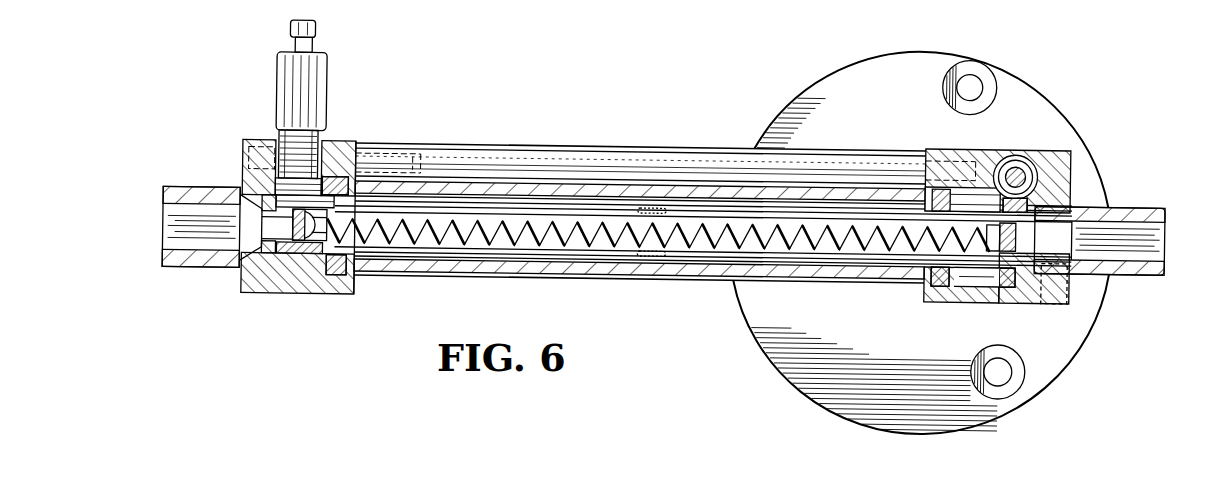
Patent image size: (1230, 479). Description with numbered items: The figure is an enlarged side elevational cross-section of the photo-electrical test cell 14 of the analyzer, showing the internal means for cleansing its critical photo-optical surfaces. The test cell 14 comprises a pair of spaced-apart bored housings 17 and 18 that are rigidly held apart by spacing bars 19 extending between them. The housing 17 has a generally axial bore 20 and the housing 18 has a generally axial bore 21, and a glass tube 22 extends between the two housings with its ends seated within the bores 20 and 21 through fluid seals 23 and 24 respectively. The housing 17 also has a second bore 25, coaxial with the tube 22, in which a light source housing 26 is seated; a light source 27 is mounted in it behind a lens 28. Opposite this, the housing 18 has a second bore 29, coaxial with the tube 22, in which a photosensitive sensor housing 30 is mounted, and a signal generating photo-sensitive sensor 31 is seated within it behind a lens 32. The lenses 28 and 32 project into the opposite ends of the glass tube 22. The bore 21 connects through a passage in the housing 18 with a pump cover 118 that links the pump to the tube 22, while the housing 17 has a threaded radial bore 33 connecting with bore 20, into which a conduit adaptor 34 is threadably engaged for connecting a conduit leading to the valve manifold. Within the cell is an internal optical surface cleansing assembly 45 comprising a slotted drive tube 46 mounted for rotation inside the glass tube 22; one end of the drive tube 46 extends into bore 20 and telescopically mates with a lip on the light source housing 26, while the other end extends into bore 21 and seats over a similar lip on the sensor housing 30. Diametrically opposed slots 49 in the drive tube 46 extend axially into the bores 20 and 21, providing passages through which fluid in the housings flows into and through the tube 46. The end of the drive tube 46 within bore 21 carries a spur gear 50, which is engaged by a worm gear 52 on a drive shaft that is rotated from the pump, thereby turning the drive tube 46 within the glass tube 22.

The photo-electrical test cell 14 is at (572, 143).
The housing 17 is at (288, 296).
The housing 18 is at (1062, 300).
The spacing bars 19 is at (666, 157).
The axial bore 20 is at (306, 269).
The axial bore 21 is at (980, 290).
The glass tube 22 is at (632, 268).
The fluid seal 23 is at (352, 284).
The fluid seal 24 is at (926, 292).
The second bore 25 is at (266, 273).
The light source housing 26 is at (209, 188).
The light source 27 is at (192, 212).
The lens 28 is at (262, 263).
The second bore 29 is at (1068, 272).
The photosensitive sensor housing 30 is at (1162, 200).
The signal generating photo-sensitive sensor 31 is at (1160, 251).
The lens 32 is at (1068, 210).
The threaded radial bore 33 is at (332, 143).
The conduit adaptor 34 is at (276, 82).
The optical surface cleansing assembly 45 is at (556, 262).
The slotted drive tube 46 is at (424, 262).
The slots 49 is at (622, 258).
The spur gear 50 is at (980, 282).
The worm gear 52 is at (1000, 158).
The pump cover 118 is at (768, 345).